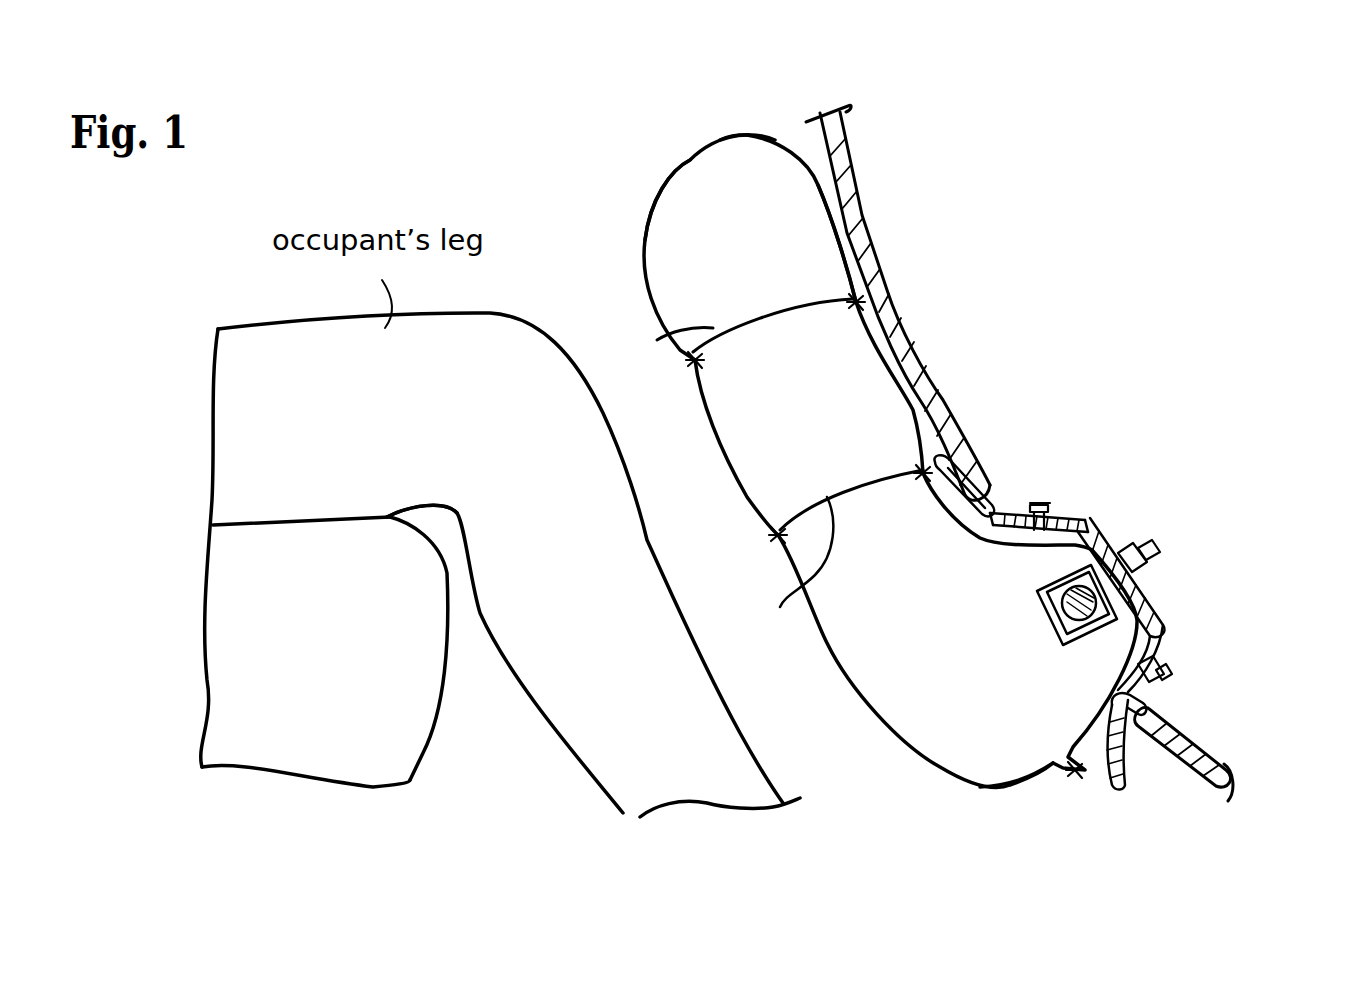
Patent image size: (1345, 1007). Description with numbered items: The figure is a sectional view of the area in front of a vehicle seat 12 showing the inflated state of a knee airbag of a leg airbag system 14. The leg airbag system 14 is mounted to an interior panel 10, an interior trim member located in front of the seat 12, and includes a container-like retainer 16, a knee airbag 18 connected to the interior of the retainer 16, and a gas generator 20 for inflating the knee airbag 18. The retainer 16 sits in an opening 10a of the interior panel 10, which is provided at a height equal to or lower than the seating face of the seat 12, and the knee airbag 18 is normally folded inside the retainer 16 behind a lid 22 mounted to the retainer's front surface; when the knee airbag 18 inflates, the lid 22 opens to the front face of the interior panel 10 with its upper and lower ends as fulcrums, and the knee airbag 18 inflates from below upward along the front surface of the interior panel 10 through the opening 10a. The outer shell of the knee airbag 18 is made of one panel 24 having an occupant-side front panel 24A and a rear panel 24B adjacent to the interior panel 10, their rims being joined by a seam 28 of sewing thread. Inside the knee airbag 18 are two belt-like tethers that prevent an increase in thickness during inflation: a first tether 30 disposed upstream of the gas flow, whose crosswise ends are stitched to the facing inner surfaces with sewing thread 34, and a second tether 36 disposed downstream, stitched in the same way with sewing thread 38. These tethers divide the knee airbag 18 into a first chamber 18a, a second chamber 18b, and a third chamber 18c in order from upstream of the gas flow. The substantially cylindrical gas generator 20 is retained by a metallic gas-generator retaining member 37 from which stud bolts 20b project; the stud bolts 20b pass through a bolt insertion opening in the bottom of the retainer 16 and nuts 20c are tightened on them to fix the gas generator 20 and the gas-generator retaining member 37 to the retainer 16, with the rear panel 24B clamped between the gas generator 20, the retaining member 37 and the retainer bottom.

The interior panel 10 is at (850, 140).
The opening 10a is at (1167, 733).
The seat 12 is at (403, 733).
The leg airbag system 14 is at (1210, 683).
The retainer 16 is at (1110, 540).
The knee airbag 18 is at (634, 163).
The first chamber 18a is at (946, 740).
The second chamber 18b is at (864, 374).
The third chamber 18c is at (786, 223).
The gas generator 20 is at (1152, 610).
The stud bolts 20b is at (1147, 556).
The nuts 20c is at (1125, 541).
The lid 22 is at (1003, 515).
The panel 24 is at (761, 128).
The front panel 24A is at (643, 217).
The rear panel 24B is at (840, 247).
The seam 28 is at (1075, 775).
The first tether 30 is at (797, 571).
The sewing thread 34 is at (780, 520).
The second tether 36 is at (657, 340).
The gas-generator retaining member 37 is at (1073, 640).
The sewing thread 38 is at (864, 300).